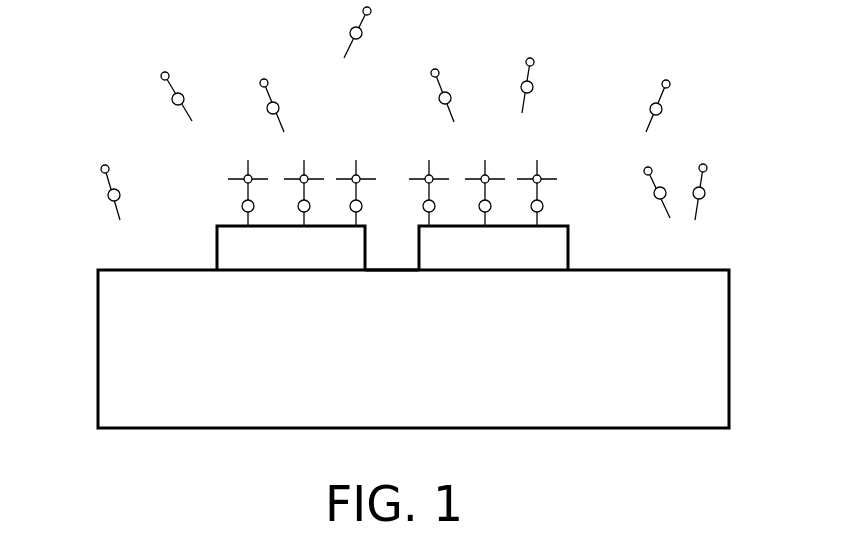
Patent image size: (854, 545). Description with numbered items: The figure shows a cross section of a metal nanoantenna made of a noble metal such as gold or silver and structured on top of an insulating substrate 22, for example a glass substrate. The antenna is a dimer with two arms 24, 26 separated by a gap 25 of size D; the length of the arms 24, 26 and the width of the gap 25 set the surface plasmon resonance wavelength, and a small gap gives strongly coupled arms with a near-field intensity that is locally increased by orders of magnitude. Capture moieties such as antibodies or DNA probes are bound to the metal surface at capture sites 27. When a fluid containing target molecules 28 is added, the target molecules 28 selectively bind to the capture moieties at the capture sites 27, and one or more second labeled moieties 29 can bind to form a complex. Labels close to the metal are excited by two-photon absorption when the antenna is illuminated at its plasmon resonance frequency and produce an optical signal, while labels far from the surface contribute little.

The insulating substrate 22 is at (398, 371).
The antenna arm 24 is at (278, 261).
The gap 25 is at (378, 261).
The antenna arm 26 is at (478, 261).
The capture site 27 is at (243, 221).
The target molecule 28 is at (108, 196).
The second labeled moiety 29 is at (307, 174).